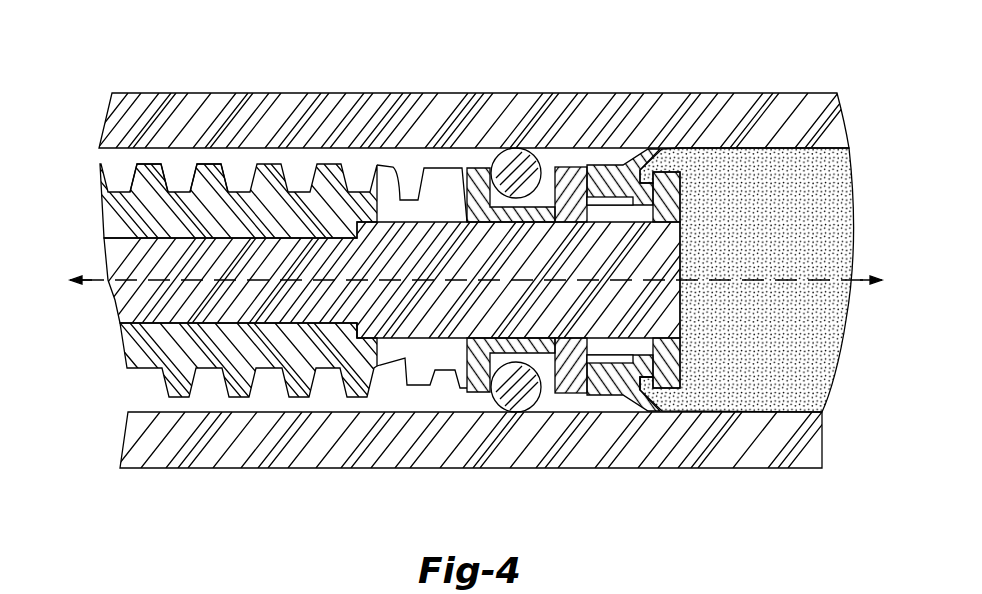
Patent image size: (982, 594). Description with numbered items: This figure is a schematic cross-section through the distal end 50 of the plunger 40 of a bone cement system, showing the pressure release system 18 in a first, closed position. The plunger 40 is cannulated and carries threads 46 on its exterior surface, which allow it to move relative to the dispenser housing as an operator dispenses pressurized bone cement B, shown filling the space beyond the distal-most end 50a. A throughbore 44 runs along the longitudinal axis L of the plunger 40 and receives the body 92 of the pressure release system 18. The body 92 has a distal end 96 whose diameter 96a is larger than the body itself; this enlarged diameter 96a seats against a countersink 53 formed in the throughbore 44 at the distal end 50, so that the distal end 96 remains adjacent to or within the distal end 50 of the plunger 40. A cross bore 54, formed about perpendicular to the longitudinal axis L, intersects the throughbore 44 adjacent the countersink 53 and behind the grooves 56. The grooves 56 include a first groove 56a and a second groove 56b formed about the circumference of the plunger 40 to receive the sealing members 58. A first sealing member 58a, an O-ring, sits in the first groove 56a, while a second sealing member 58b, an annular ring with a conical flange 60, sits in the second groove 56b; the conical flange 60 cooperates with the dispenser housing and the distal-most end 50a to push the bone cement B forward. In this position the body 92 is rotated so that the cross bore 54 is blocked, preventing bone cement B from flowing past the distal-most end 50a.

The pressure release system 18 is at (95, 173).
The plunger 40 is at (124, 387).
The throughbore 44 is at (165, 312).
The threads 46 is at (210, 164).
The body 92 is at (100, 268).
The distal end 50 is at (360, 168).
The distal-most end 50a is at (682, 187).
The diameter 96a is at (412, 218).
The distal end 96 is at (458, 218).
The sealing members 58 is at (502, 148).
The first sealing member 58a is at (517, 392).
The second sealing member 58b is at (610, 394).
The grooves 56 is at (578, 160).
The first groove 56a is at (556, 177).
The second groove 56b is at (637, 393).
The countersink 53 is at (366, 333).
The cross bore 54 is at (412, 345).
The conical flange 60 is at (672, 402).
The bone cement B is at (838, 170).
The longitudinal axis L is at (477, 281).